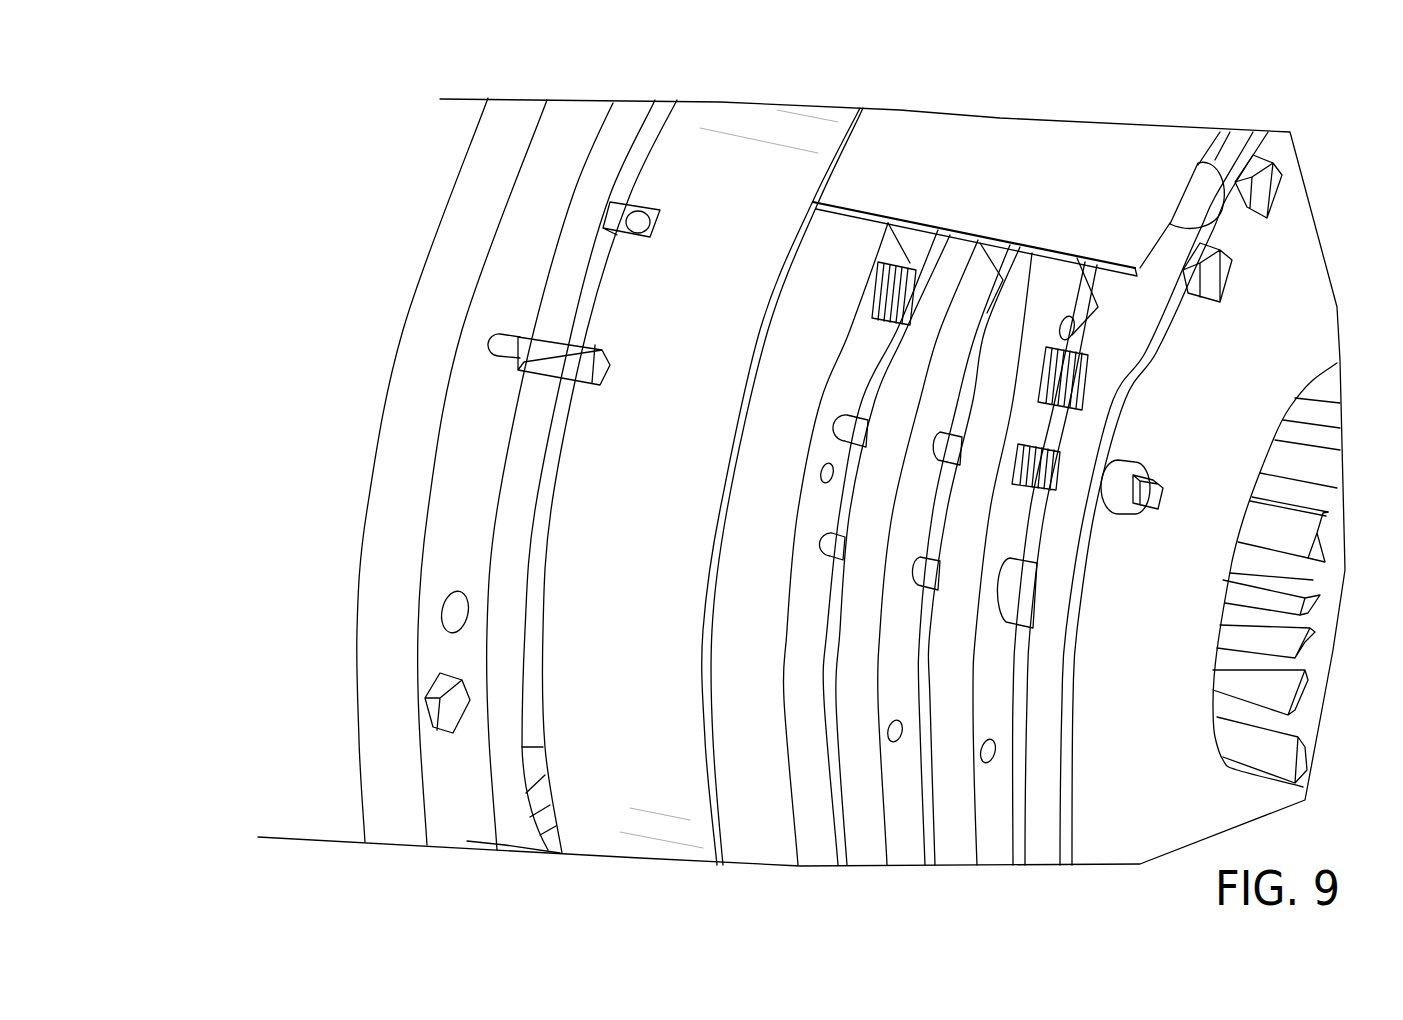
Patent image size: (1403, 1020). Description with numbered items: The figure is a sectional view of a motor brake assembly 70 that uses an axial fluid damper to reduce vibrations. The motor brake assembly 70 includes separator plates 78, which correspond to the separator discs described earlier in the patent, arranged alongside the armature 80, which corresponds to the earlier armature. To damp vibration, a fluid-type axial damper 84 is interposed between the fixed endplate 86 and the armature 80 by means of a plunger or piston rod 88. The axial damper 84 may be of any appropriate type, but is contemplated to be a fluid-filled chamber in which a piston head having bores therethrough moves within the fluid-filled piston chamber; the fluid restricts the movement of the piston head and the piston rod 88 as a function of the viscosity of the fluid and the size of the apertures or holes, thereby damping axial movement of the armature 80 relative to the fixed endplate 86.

The motor brake assembly 70 is at (360, 112).
The separator plates 78 is at (947, 254).
The armature 80 is at (797, 368).
The fluid-type axial damper 84 is at (1008, 587).
The fixed endplate 86 is at (1210, 166).
The plunger or piston rod 88 is at (833, 555).